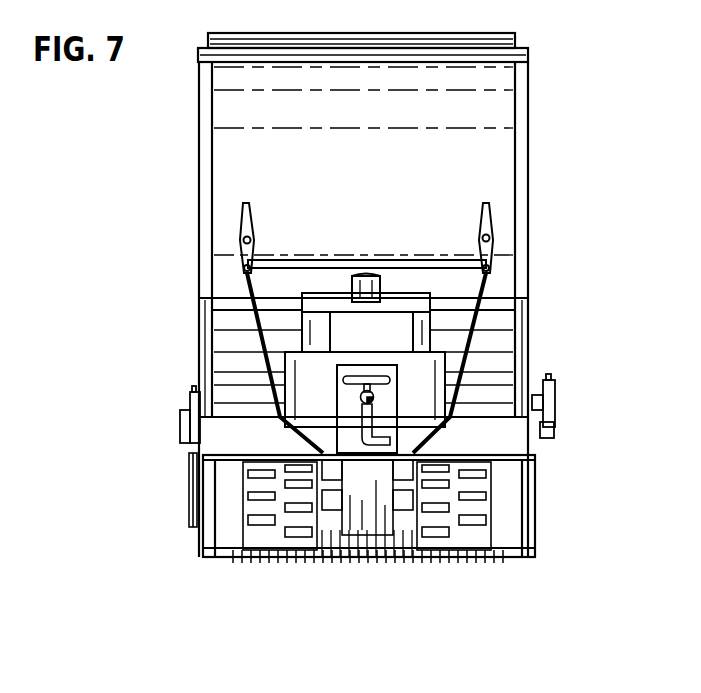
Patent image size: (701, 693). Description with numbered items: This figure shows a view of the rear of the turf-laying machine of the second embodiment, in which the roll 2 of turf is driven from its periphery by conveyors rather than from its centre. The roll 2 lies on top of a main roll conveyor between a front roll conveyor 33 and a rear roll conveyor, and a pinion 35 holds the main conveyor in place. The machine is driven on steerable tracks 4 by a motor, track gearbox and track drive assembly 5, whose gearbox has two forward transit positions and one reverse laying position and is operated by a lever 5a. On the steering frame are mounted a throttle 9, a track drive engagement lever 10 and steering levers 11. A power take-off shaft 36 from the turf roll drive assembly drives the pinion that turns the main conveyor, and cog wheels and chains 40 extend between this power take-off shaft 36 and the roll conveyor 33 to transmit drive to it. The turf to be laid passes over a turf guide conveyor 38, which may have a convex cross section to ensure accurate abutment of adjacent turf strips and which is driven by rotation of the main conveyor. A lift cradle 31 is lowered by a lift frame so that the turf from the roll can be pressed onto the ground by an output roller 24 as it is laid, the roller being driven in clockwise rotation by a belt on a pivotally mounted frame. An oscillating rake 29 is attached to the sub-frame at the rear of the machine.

The roll 2 is at (373, 70).
The lift cradle 31 is at (528, 55).
The throttle 9 is at (243, 240).
The track drive engagement lever 10 is at (490, 208).
The steering levers 11 is at (494, 262).
The front roll conveyor 33 is at (533, 303).
The motor, track gearbox and track drive assembly 5 is at (445, 430).
The lever 5a is at (383, 376).
The pinion 35 is at (180, 414).
The cog wheels and chains 40 is at (557, 407).
The power take-off shaft 36 is at (556, 428).
The turf guide conveyor 38 is at (533, 432).
The output roller 24 is at (189, 516).
The steerable tracks 4 is at (203, 549).
The oscillating rake 29 is at (357, 562).